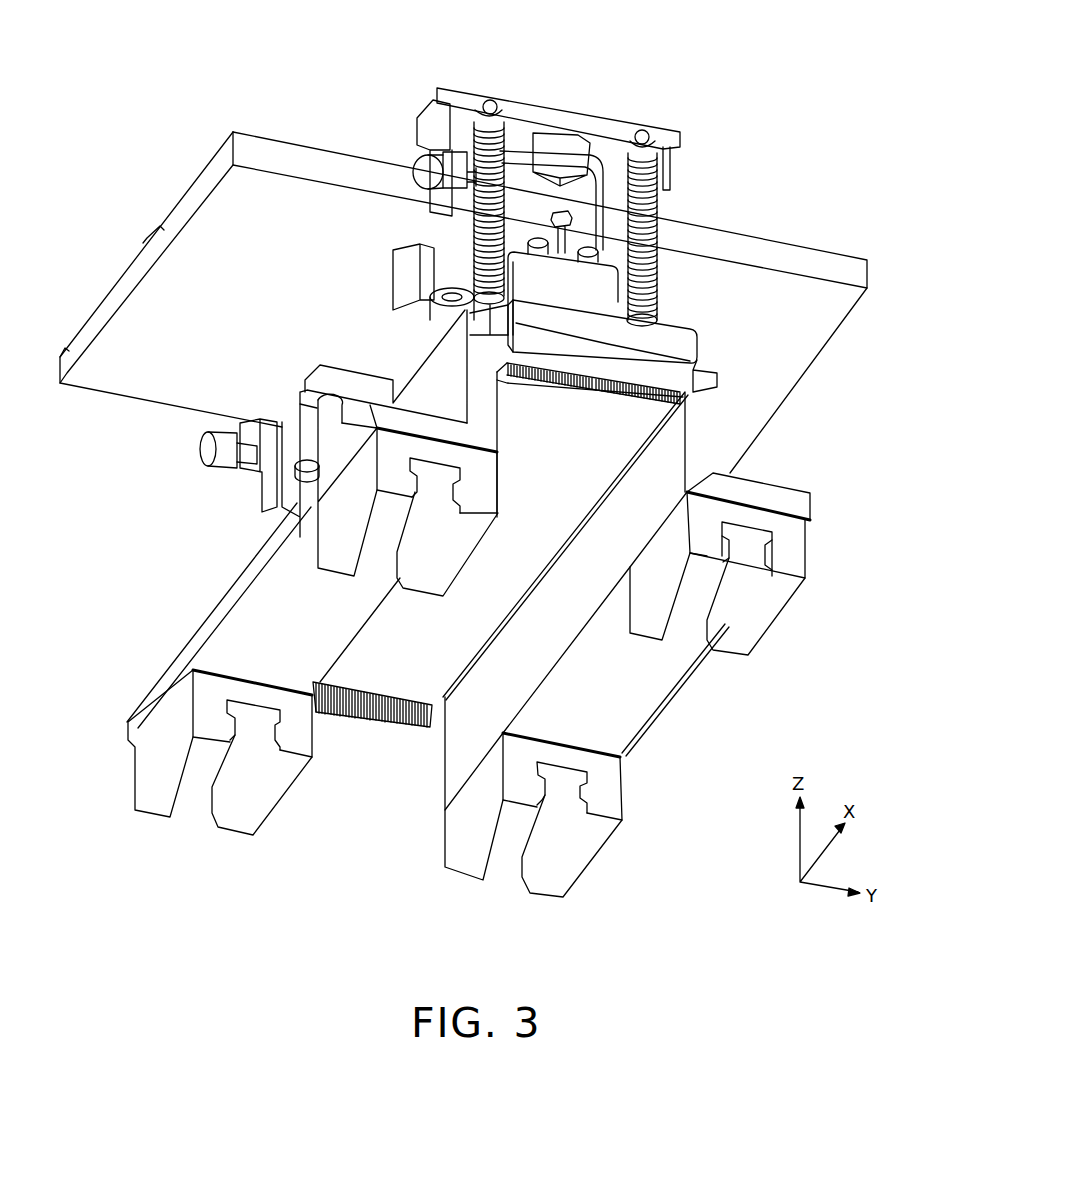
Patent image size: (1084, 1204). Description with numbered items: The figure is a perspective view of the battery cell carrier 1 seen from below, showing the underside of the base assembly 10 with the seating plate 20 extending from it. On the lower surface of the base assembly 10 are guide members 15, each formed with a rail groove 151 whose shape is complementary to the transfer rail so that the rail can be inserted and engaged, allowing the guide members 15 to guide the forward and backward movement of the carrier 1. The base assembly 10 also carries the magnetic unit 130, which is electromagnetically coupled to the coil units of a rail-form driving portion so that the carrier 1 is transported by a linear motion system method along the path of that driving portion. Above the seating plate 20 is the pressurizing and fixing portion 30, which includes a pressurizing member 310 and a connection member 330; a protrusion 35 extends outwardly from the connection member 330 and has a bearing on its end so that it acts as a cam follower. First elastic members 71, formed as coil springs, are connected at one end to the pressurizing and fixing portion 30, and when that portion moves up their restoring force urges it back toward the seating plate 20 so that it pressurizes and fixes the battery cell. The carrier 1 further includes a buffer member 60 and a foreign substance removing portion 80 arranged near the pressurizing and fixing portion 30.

The carrier 1 is at (640, 53).
The base assembly 10 is at (630, 703).
The guide member 15 is at (790, 560).
The rail groove 151 is at (731, 562).
The magnetic unit 130 is at (555, 490).
The seating plate 20 is at (843, 308).
The pressurizing and fixing portion 30 is at (782, 128).
The pressurizing member 310 is at (662, 131).
The connection member 330 is at (663, 187).
The protrusion 35 is at (440, 172).
The buffer member 60 is at (657, 334).
The first elastic member 71 is at (663, 238).
The foreign substance removing portion 80 is at (640, 397).